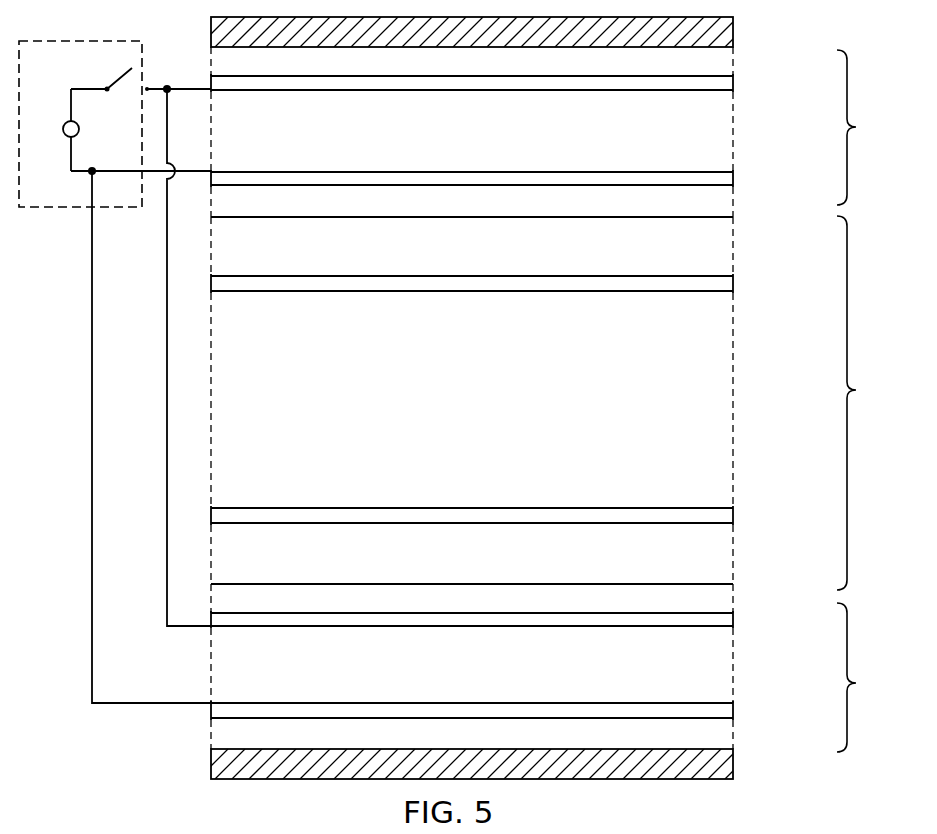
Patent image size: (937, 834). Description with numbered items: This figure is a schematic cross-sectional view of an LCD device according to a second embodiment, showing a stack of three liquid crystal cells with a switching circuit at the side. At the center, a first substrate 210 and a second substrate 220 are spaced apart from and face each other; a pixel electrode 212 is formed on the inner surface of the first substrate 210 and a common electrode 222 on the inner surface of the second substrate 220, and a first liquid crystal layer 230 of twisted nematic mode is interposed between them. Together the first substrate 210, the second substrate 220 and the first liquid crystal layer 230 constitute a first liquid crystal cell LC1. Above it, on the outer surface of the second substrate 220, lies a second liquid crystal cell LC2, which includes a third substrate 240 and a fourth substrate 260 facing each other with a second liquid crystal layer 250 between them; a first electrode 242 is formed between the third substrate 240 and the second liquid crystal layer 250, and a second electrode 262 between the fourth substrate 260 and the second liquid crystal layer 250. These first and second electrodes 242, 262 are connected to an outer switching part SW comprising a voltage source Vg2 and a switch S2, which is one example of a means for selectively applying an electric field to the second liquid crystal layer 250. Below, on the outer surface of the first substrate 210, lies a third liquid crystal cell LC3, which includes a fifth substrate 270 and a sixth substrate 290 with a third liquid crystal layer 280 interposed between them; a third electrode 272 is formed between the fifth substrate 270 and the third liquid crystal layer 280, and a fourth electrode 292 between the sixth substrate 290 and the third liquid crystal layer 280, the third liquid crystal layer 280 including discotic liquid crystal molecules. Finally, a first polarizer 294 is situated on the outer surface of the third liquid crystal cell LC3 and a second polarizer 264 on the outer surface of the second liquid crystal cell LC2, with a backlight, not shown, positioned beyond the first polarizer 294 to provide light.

The outer switching part SW is at (80, 112).
The switch S2 is at (101, 76).
The voltage source Vg2 is at (50, 130).
The second polarizer 264 is at (722, 37).
The fourth substrate 260 is at (722, 64).
The second electrode 262 is at (722, 91).
The second liquid crystal layer 250 is at (722, 125).
The first electrode 242 is at (722, 183).
The third substrate 240 is at (722, 206).
The second substrate 220 is at (472, 246).
The common electrode 222 is at (722, 288).
The first liquid crystal layer 230 is at (722, 382).
The pixel electrode 212 is at (722, 521).
The first substrate 210 is at (472, 554).
The fifth substrate 270 is at (722, 600).
The third electrode 272 is at (722, 626).
The third liquid crystal layer 280 is at (722, 682).
The fourth electrode 292 is at (722, 714).
The sixth substrate 290 is at (722, 739).
The first polarizer 294 is at (722, 767).
The first liquid crystal cell LC1 is at (867, 403).
The second liquid crystal cell LC2 is at (867, 127).
The third liquid crystal cell LC3 is at (866, 677).